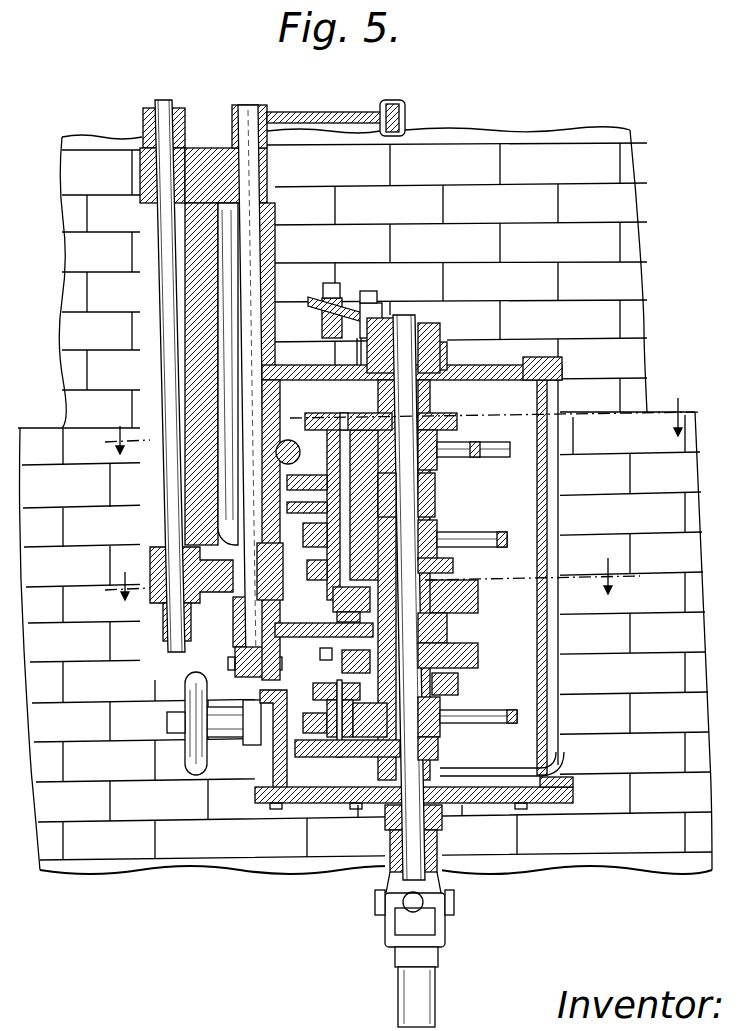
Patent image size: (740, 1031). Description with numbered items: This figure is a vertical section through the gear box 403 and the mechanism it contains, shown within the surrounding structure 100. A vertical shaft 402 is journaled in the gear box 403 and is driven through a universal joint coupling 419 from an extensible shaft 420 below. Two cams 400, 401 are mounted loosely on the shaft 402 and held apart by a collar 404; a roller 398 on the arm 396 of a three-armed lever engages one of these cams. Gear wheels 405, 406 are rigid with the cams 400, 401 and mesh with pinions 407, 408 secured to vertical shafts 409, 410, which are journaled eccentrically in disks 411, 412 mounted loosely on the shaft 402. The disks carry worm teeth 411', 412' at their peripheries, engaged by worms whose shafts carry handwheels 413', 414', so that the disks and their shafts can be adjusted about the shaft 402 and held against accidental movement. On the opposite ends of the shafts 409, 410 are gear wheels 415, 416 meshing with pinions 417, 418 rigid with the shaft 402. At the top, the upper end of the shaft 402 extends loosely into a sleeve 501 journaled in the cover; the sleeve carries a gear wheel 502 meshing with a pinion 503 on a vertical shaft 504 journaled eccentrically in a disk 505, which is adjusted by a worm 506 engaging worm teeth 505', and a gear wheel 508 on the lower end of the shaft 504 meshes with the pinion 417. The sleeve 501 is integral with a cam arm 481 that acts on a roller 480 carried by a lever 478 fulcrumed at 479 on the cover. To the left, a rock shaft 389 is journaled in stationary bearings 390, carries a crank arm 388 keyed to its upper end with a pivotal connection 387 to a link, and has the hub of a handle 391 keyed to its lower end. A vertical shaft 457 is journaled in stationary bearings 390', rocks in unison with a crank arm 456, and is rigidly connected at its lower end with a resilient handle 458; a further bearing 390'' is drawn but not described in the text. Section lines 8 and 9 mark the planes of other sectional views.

The masonry wall 100 is at (630, 202).
The pivotal connection 387 is at (398, 106).
The crank arm 388 is at (330, 112).
The rock shaft 389 is at (253, 106).
The stationary bearings 390 is at (253, 397).
The stationary bearings 390' is at (141, 175).
The lower bearing flange 390'' is at (169, 582).
The handle 391 is at (237, 674).
The lever arm 396 is at (305, 623).
The roller 398 is at (336, 600).
The cam 400 is at (478, 596).
The cam 401 is at (478, 656).
The vertical shaft 402 is at (420, 400).
The gear box 403 is at (548, 369).
The collar 404 is at (447, 628).
The gear wheel 405 is at (453, 566).
The gear wheel 406 is at (458, 686).
The pinion 407 is at (316, 562).
The pinion 408 is at (334, 692).
The vertical shaft 409 is at (312, 535).
The vertical shaft 410 is at (339, 757).
The disk 411 is at (462, 535).
The worm teeth 411' is at (519, 547).
The disk 412 is at (467, 723).
The worm teeth 412' is at (517, 705).
The handwheel 413' is at (179, 374).
The handwheel 414' is at (166, 723).
The gear wheel 415 is at (287, 506).
The gear wheel 416 is at (309, 757).
The pinion 417 is at (435, 495).
The pinion 418 is at (438, 745).
The universal joint coupling 419 is at (445, 935).
The extensible shaft 420 is at (398, 991).
The crank arm 456 is at (143, 124).
The vertical shaft 457 is at (165, 108).
The handle 458 is at (163, 634).
The lever 478 is at (313, 300).
The fulcrum 479 is at (370, 293).
The roller 480 is at (322, 330).
The cam arm 481 is at (383, 318).
The sleeve 501 is at (447, 362).
The gear wheel 502 is at (457, 424).
The pinion 503 is at (320, 413).
The vertical shaft 504 is at (345, 413).
The disk 505 is at (464, 455).
The worm teeth 505' is at (540, 441).
The worm 506 is at (276, 456).
The gear wheel 508 is at (287, 483).
The section line 8- 8 is at (397, 426).
The section line 9- 9 is at (367, 579).